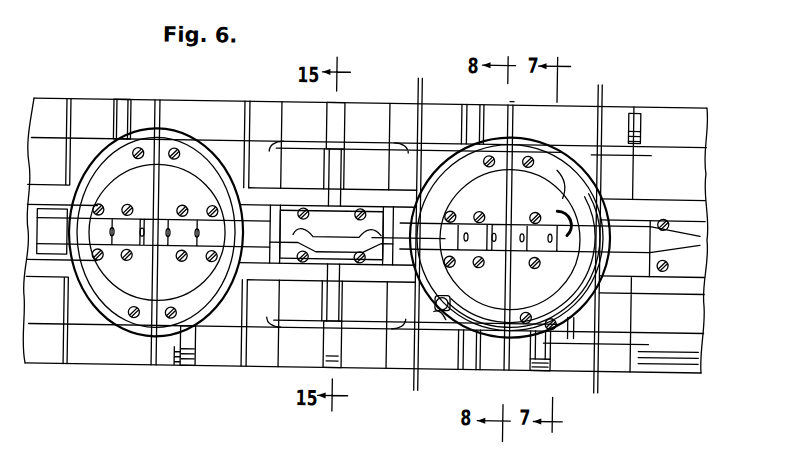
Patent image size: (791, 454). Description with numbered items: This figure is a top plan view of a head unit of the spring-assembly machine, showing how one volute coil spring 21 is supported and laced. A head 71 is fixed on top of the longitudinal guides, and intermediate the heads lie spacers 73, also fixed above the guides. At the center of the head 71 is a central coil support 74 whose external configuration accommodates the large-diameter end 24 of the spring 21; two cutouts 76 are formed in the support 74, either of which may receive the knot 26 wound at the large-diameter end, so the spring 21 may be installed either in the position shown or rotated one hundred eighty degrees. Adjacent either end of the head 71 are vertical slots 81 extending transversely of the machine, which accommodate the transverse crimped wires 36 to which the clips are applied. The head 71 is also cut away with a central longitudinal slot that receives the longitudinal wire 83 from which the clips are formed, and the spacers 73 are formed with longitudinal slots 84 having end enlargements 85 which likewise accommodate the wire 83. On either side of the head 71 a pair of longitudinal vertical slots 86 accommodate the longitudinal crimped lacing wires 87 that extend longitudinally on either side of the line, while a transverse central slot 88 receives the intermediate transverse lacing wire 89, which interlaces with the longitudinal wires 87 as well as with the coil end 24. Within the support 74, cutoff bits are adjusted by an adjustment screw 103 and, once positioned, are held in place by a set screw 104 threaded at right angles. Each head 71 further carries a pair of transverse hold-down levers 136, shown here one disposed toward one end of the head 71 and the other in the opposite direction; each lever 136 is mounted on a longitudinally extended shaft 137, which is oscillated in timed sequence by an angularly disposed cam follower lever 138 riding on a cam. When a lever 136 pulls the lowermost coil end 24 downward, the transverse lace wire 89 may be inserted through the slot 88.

The volute coil spring 21 is at (490, 336).
The large-diameter end 24 is at (570, 338).
The wrap or knot 26 is at (447, 319).
The transverse crimped wire 36 is at (418, 87).
The head 71 is at (173, 121).
The spacer 73 is at (297, 272).
The central coil support 74 is at (335, 238).
The cutout 76 is at (563, 178).
The vertical slot 81 is at (68, 120).
The longitudinal wire 83 is at (645, 250).
The longitudinal slot 84 is at (358, 235).
The end enlargement 85 is at (306, 204).
The longitudinal vertical slot 86 is at (268, 140).
The longitudinal crimped lacing wire 87 is at (647, 149).
The transverse central slot 88 is at (150, 286).
The intermediate transverse lacing wire 89 is at (512, 100).
The adjustment screw 103 is at (112, 237).
The set screw 104 is at (197, 237).
The transverse hold-down lever 136 is at (122, 103).
The longitudinally extended shaft 137 is at (178, 364).
The cam follower lever 138 is at (335, 170).